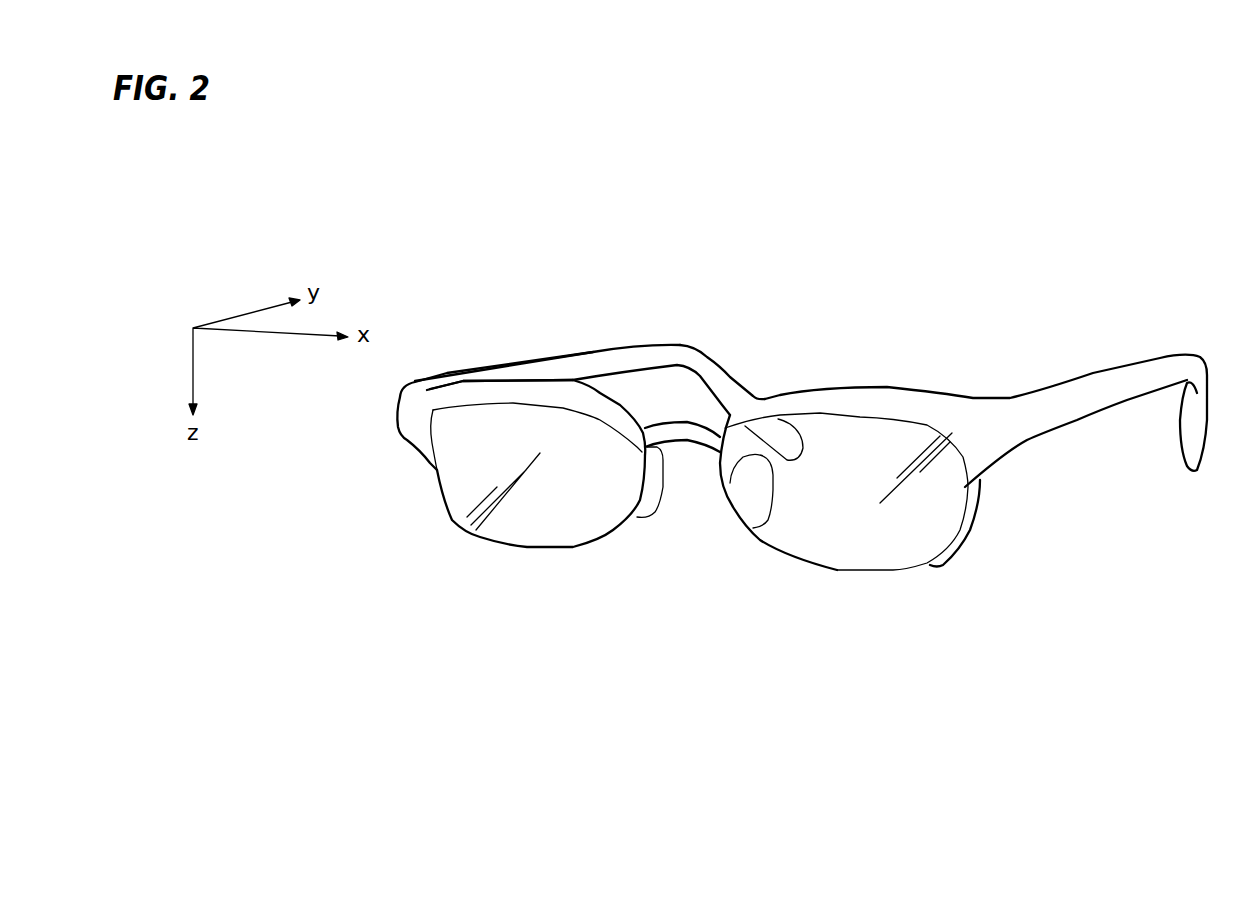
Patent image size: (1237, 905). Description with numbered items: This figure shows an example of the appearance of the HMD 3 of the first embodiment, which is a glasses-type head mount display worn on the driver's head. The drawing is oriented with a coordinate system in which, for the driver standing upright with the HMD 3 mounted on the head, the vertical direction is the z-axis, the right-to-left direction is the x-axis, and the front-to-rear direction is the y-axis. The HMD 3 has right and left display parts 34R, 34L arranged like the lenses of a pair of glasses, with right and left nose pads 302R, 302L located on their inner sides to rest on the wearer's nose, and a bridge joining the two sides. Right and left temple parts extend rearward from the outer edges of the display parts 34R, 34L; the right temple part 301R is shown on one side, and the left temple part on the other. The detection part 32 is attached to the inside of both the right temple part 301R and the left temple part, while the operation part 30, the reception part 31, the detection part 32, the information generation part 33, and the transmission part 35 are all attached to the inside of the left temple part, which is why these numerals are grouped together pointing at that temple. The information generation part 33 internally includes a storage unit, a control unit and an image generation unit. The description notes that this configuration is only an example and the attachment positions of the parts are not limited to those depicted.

The HMD 3 is at (1170, 268).
The operation part 30 is at (802, 400).
The reception part 31 is at (802, 400).
The detection part 32 is at (441, 370).
The information generation part 33 is at (802, 400).
The transmission part 35 is at (978, 417).
The right temple part 301R is at (593, 360).
The right nose pad 302R is at (655, 483).
The left nose pad 302L is at (748, 503).
The right display part 34R is at (533, 530).
The left display part 34L is at (842, 550).